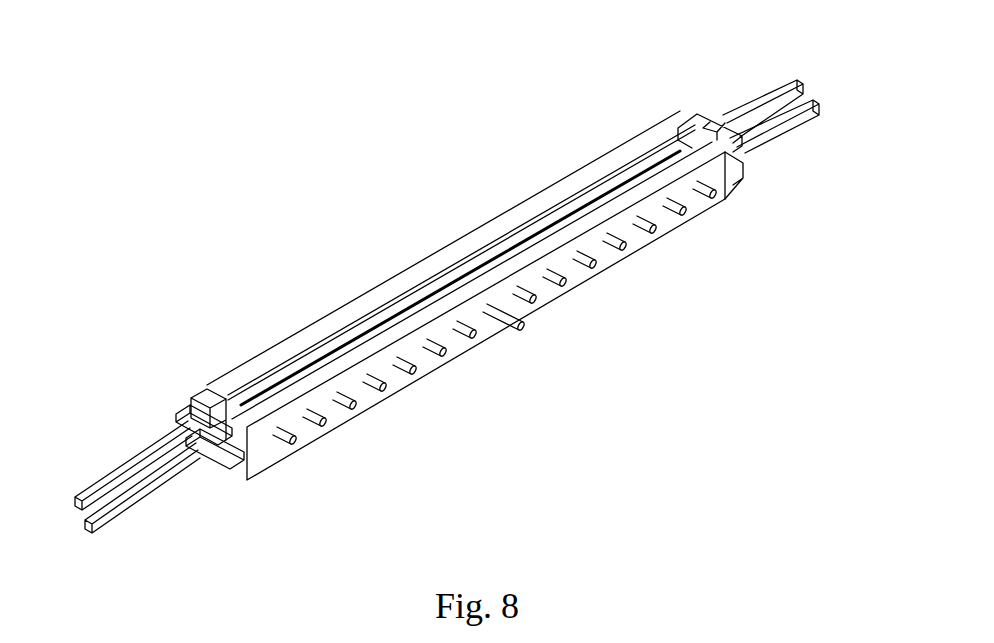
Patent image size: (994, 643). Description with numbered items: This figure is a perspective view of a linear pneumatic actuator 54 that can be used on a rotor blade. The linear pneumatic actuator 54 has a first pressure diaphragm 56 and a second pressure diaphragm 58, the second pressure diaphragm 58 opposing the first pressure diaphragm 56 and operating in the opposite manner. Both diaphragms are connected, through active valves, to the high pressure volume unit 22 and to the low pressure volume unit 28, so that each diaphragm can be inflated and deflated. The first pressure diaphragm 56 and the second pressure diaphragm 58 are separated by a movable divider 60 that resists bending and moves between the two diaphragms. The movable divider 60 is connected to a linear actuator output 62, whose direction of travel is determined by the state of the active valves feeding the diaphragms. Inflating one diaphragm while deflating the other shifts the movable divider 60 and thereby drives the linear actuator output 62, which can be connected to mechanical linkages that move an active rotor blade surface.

The high pressure volume unit 22 is at (88, 533).
The low pressure volume unit 28 is at (77, 498).
The linear pneumatic actuator 54 is at (568, 447).
The first pressure diaphragm 56 is at (690, 157).
The second pressure diaphragm 58 is at (679, 132).
The movable divider 60 is at (253, 390).
The linear actuator output 62 is at (513, 345).